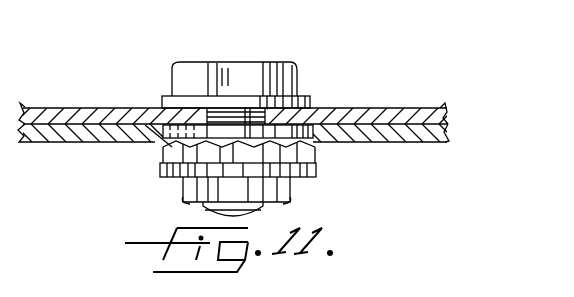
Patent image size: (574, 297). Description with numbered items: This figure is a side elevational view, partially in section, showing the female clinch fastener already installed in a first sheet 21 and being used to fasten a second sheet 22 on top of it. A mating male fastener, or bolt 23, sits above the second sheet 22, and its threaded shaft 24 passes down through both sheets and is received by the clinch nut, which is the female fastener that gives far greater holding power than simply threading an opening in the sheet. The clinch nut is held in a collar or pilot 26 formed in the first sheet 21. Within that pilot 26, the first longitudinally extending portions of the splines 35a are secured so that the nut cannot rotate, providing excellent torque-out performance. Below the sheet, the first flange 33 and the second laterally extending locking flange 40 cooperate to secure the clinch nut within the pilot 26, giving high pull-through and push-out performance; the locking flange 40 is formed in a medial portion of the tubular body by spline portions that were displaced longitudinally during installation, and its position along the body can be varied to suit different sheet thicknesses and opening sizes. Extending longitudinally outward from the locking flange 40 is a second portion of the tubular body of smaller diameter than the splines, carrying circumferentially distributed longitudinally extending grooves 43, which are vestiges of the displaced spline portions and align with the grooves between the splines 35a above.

The first sheet 21 is at (418, 142).
The second sheet 22 is at (417, 112).
The bolt 23 is at (292, 66).
The threaded shaft 24 is at (200, 110).
The pilot 26 is at (228, 159).
The first flange 33 is at (312, 131).
The first longitudinally extending portions of the splines 35a is at (205, 157).
The second laterally extending locking flange 40 is at (316, 170).
The longitudinally extending grooves 43 is at (222, 192).